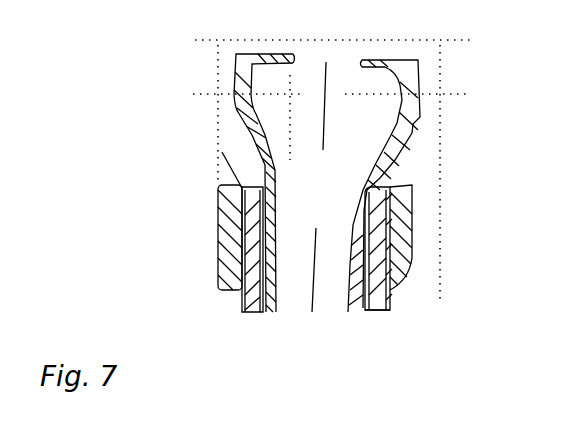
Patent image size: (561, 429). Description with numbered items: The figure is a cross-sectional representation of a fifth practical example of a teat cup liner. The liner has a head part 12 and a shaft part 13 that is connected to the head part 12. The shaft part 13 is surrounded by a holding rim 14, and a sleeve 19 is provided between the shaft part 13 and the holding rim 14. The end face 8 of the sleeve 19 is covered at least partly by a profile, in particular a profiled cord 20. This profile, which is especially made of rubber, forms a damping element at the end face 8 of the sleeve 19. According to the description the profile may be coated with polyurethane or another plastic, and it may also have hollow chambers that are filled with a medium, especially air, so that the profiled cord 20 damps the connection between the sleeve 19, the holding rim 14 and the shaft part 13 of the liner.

The head part 12 is at (420, 100).
The end face 8 is at (380, 195).
The profiled cord 20 is at (395, 208).
The holding rim 14 is at (390, 268).
The sleeve 19 is at (378, 309).
The shaft part 13 is at (345, 312).